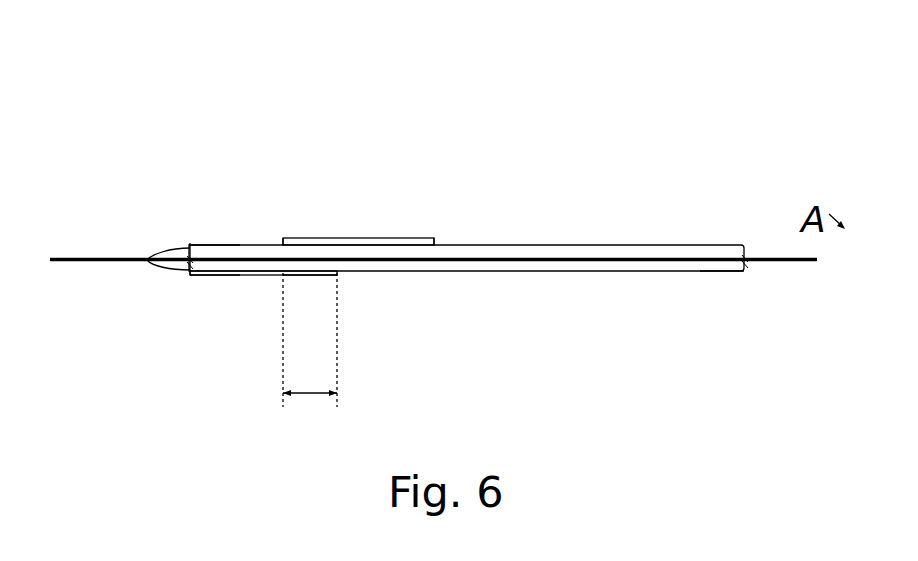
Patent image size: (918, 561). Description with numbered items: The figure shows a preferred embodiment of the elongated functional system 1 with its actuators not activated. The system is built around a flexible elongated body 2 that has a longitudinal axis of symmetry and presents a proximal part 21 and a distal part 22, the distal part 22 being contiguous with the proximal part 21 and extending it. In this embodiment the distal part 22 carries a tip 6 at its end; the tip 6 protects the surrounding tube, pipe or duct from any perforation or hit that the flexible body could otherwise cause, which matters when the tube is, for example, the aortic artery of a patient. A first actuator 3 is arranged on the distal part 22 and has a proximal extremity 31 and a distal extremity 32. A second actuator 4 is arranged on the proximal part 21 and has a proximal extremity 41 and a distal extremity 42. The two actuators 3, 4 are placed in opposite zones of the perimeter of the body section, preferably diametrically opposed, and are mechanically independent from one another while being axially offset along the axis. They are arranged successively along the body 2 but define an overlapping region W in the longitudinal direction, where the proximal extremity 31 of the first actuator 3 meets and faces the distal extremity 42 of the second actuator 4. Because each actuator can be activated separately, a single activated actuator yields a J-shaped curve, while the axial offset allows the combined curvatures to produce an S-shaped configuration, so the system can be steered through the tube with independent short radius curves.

The elongated functional system 1 is at (578, 151).
The elongated body 2 is at (646, 256).
The proximal part 21 is at (696, 280).
The distal part 22 is at (216, 237).
The first actuator 3 is at (277, 278).
The proximal extremity 31 is at (305, 283).
The distal extremity 32 is at (190, 283).
The second actuator 4 is at (380, 237).
The proximal extremity 41 is at (435, 230).
The distal extremity 42 is at (287, 231).
The tip 6 is at (168, 250).
The overlapping region W is at (310, 343).